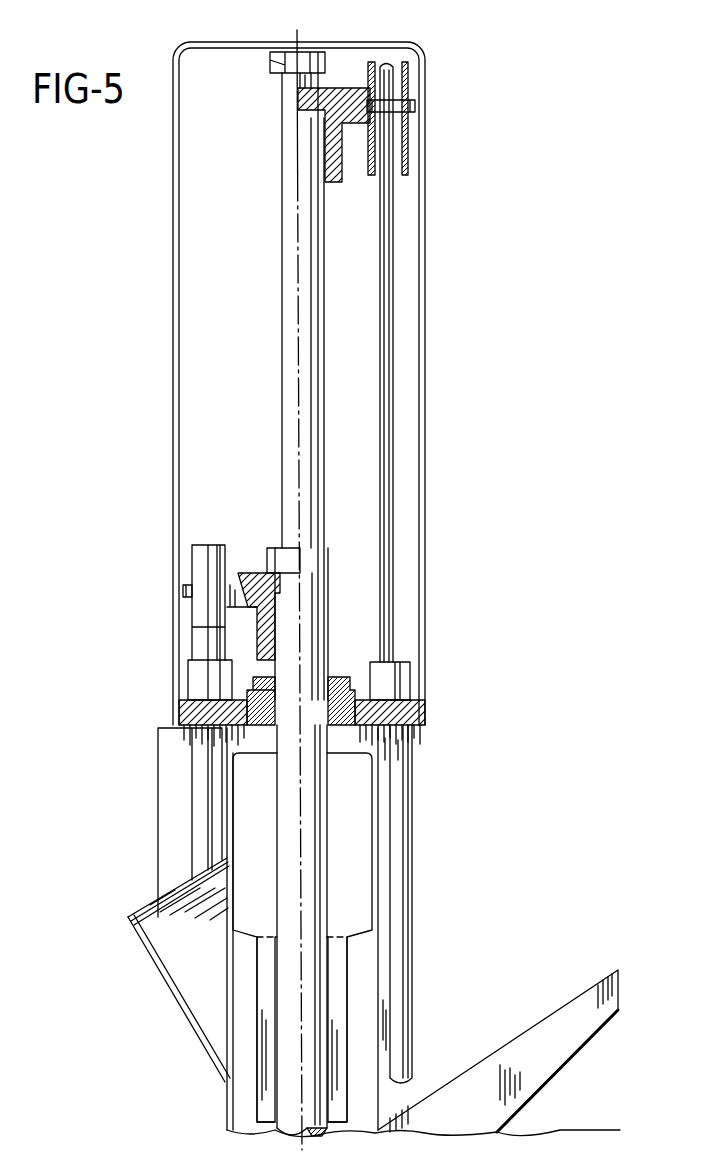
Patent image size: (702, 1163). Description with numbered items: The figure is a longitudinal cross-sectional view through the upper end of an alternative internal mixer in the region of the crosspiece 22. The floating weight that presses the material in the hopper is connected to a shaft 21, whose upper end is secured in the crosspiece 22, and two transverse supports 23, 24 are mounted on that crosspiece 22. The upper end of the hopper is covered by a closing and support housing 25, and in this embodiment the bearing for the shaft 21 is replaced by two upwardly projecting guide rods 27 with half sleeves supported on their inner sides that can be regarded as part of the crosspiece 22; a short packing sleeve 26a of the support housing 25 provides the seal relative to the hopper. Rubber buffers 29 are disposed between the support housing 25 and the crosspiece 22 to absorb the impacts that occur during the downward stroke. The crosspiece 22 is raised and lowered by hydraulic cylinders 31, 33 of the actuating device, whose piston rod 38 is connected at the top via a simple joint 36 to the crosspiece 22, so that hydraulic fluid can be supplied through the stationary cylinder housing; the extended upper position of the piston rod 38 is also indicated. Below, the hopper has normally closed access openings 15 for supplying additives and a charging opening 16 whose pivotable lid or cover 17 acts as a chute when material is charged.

The access openings 15 is at (160, 990).
The charging opening 16 is at (377, 1015).
The lid or cover 17 is at (572, 1010).
The shaft 21 is at (325, 298).
The crosspiece 22 is at (341, 79).
The transverse support 23 is at (195, 563).
The transverse support 24 is at (412, 130).
The closing and support housing 25 is at (415, 728).
The packing sleeve 26a is at (263, 730).
The guide rods 27 is at (285, 243).
The rubber buffers 29 is at (410, 165).
The cylinder 31 is at (408, 902).
The cylinder 33 is at (200, 808).
The joint 36 is at (405, 100).
The piston rod 38 is at (395, 250).